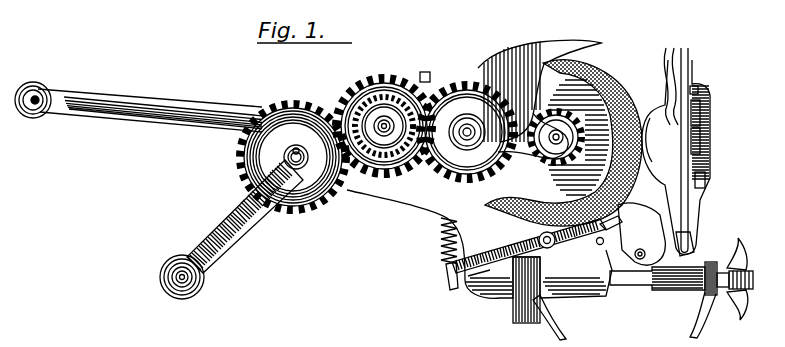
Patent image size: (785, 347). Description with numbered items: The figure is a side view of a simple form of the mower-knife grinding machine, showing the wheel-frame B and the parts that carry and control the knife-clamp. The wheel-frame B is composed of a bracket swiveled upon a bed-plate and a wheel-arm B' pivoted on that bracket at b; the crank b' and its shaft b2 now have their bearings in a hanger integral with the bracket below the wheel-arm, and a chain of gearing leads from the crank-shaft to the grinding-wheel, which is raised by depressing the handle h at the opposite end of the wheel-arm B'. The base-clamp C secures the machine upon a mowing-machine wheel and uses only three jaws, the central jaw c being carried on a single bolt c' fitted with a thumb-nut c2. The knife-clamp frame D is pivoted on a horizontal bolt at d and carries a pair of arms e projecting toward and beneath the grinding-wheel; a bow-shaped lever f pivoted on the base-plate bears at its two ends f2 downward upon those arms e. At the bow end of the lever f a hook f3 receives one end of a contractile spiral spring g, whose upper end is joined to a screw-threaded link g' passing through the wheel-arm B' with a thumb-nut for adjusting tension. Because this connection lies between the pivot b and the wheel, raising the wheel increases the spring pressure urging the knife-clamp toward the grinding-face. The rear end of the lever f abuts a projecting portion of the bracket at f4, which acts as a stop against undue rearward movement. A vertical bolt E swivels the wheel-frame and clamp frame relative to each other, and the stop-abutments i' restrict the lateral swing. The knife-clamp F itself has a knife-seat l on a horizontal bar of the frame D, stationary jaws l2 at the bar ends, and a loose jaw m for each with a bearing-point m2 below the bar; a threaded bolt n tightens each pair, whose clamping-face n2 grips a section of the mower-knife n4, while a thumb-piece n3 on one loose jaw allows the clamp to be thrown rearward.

The handle h is at (33, 89).
The wheel-arm B' is at (150, 102).
The crank-shaft b2 is at (292, 156).
The crank b' is at (231, 229).
The pivot of the wheel-arm b is at (373, 123).
The wheel-frame B is at (479, 244).
The contractile spiral spring g is at (440, 241).
The screw-threaded rod or link g' is at (436, 64).
The cam wheel A is at (560, 133).
The bow-shaped lever f is at (529, 246).
The ends of the bow-lever f2 is at (611, 217).
The hook f3 is at (451, 289).
The stop f4 is at (479, 282).
The vertical pivot or bolt E is at (519, 302).
The base-clamp C is at (560, 317).
The arms of the clamp-frame e is at (606, 235).
The knife-clamp frame D is at (641, 234).
The horizontal pivot bolt d is at (646, 255).
The stop-abutments i' is at (657, 291).
The central jaw c is at (703, 300).
The bolt c' is at (743, 280).
The thumb-nut c2 is at (745, 279).
The knife-clamp F is at (676, 157).
The thumb-piece n3 is at (663, 78).
The mower-knife n4 is at (687, 50).
The clamping-face n2 is at (699, 92).
The loose jaw m is at (656, 127).
The knife-seat l is at (700, 138).
The stationary jaws l2 is at (710, 156).
The threaded bolt n is at (705, 188).
The bearing-point m2 is at (694, 244).